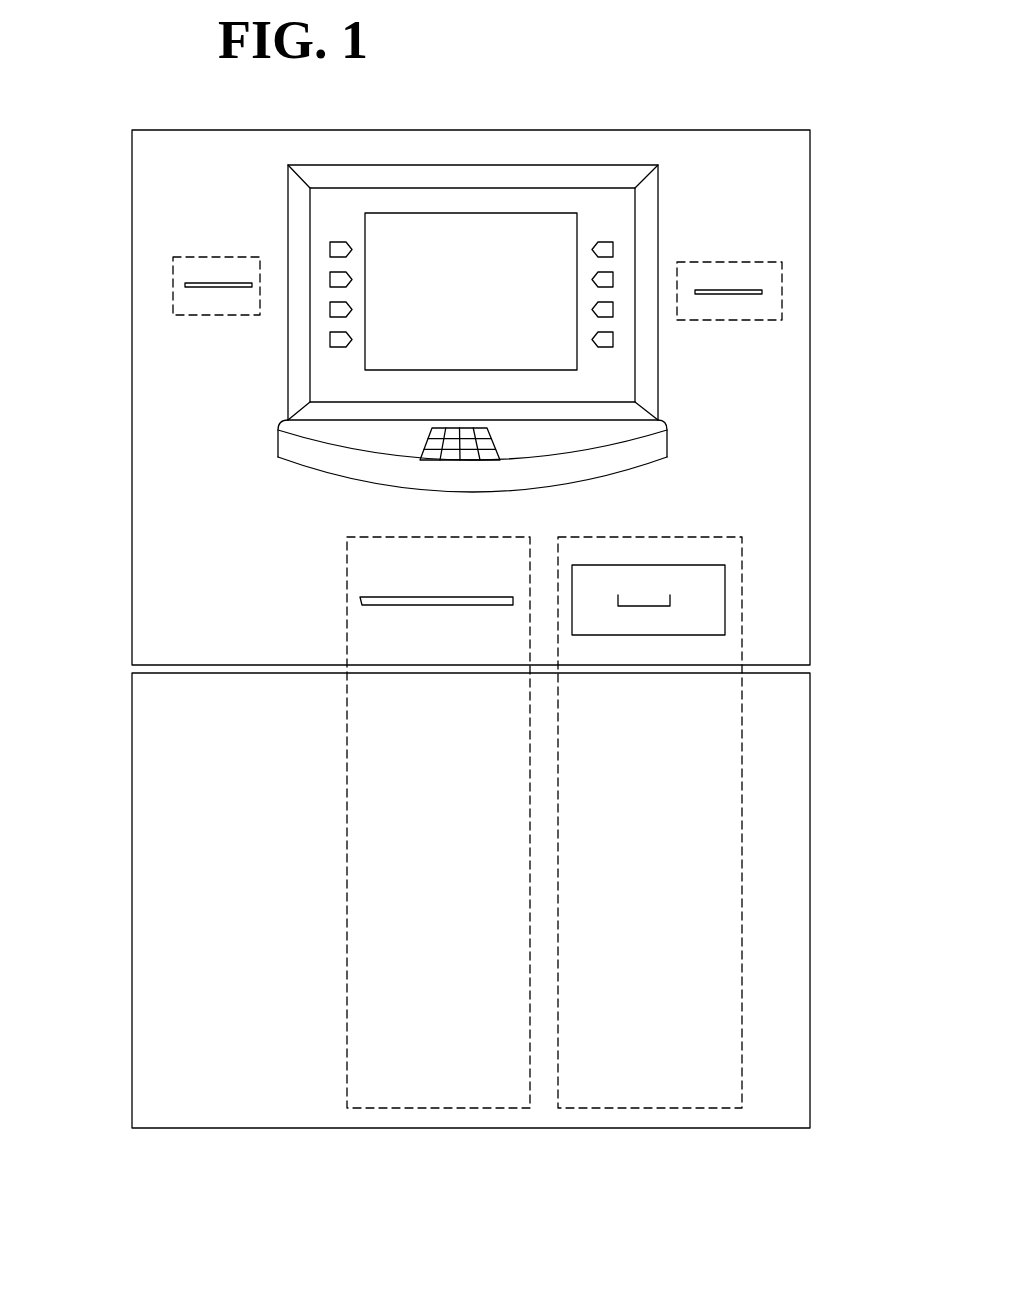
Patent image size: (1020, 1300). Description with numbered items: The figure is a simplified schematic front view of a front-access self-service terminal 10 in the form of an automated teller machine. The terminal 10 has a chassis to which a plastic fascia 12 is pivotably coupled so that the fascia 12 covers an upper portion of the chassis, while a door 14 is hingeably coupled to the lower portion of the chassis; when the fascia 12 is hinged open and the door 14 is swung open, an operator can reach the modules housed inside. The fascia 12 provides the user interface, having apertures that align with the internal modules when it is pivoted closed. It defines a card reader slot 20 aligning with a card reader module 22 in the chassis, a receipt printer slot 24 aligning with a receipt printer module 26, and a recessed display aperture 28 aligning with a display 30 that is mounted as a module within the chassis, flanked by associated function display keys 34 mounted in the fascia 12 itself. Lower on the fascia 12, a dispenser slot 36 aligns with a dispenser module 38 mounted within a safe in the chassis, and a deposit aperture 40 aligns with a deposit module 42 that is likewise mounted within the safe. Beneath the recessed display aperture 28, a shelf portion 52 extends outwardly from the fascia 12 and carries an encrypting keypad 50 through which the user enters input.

The self-service terminal 10 is at (168, 1198).
The fascia 12 is at (810, 492).
The door 14 is at (810, 838).
The card reader slot 20 is at (728, 290).
The card reader module 22 is at (782, 296).
The receipt printer slot 24 is at (213, 283).
The receipt printer module 26 is at (175, 300).
The display aperture 28 is at (488, 213).
The display 30 is at (480, 312).
The function display keys 34 is at (613, 340).
The dispenser slot 36 is at (372, 605).
The dispenser module 38 is at (347, 865).
The deposit aperture 40 is at (688, 565).
The deposit module 42 is at (742, 935).
The encrypting keypad 50 is at (447, 462).
The shelf portion 52 is at (302, 462).